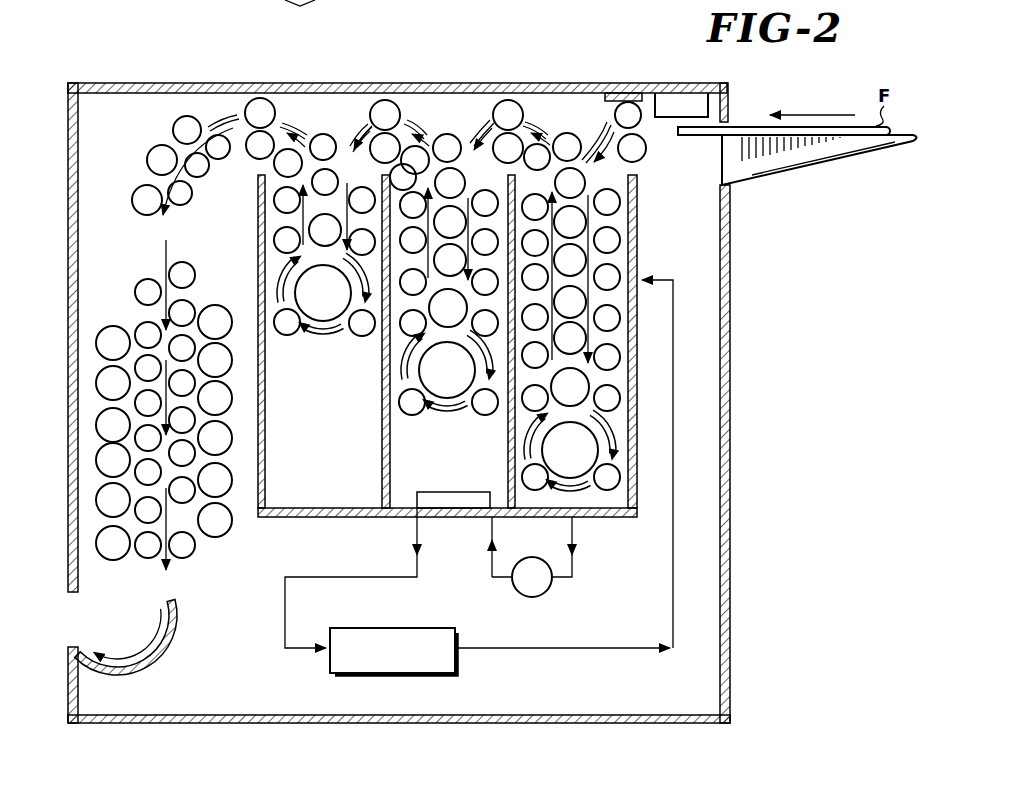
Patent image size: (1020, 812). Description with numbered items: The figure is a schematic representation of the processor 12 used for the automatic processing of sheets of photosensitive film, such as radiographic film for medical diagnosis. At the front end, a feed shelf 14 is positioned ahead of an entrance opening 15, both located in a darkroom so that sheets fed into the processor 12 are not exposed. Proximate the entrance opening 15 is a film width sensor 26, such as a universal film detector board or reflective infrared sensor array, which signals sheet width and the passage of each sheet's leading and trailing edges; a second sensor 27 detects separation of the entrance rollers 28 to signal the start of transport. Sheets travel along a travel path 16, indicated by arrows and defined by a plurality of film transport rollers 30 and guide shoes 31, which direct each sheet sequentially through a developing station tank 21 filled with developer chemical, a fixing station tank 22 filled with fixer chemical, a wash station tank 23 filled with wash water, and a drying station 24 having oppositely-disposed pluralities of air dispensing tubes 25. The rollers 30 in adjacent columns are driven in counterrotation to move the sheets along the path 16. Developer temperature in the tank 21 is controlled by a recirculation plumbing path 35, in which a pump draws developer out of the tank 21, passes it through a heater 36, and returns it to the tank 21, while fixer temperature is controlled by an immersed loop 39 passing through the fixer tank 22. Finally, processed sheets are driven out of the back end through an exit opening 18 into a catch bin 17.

The processor 12 is at (183, 70).
The feed shelf 14 is at (890, 144).
The entrance opening 15 is at (735, 122).
The travel path 16 is at (165, 244).
The catch bin 17 is at (166, 643).
The exit opening 18 is at (76, 615).
The developer tank 21 is at (612, 510).
The fixer tank 22 is at (400, 458).
The wash tank 23 is at (282, 263).
The drying station 24 is at (92, 440).
The air dispensing tubes 25 is at (110, 535).
The film width sensor 26 is at (680, 92).
The second sensor 27 is at (612, 93).
The entrance rollers 28 is at (645, 150).
The film transport rollers 30 is at (146, 328).
The guide shoes 31 is at (412, 122).
The recirculation plumbing path 35 is at (684, 588).
The heater 36 is at (330, 673).
The immersed loop 39 is at (470, 472).